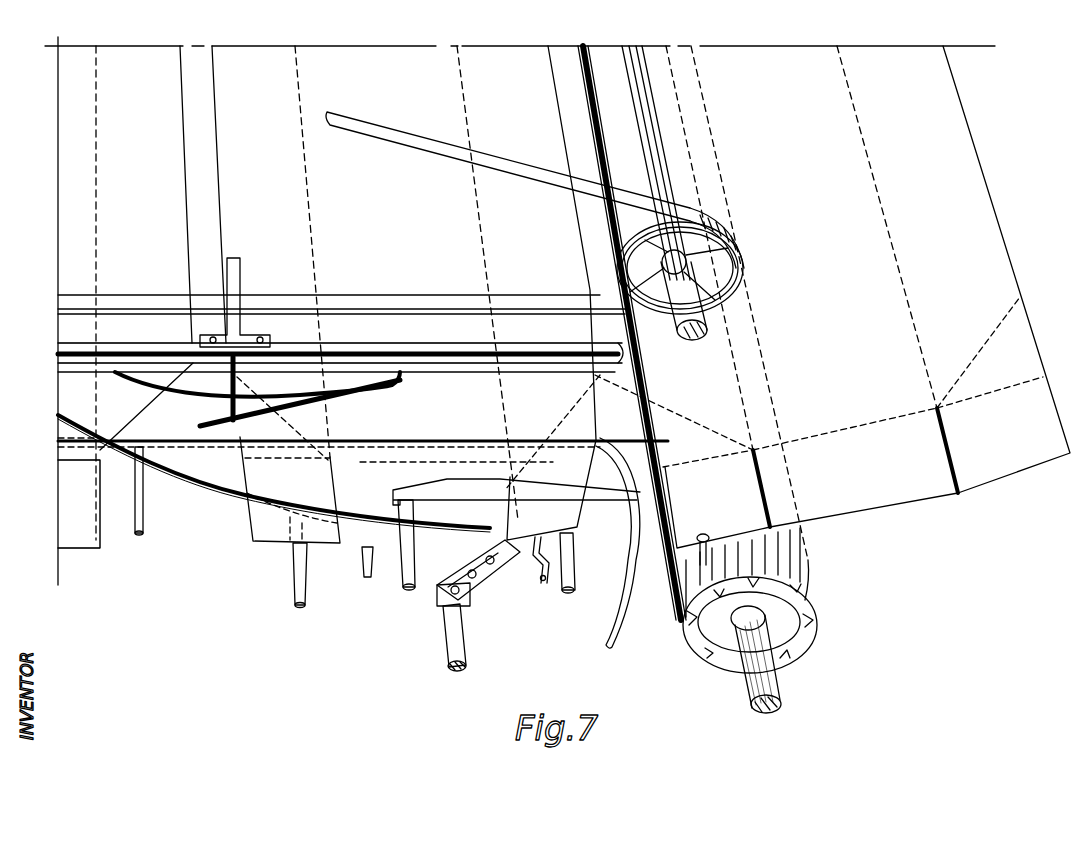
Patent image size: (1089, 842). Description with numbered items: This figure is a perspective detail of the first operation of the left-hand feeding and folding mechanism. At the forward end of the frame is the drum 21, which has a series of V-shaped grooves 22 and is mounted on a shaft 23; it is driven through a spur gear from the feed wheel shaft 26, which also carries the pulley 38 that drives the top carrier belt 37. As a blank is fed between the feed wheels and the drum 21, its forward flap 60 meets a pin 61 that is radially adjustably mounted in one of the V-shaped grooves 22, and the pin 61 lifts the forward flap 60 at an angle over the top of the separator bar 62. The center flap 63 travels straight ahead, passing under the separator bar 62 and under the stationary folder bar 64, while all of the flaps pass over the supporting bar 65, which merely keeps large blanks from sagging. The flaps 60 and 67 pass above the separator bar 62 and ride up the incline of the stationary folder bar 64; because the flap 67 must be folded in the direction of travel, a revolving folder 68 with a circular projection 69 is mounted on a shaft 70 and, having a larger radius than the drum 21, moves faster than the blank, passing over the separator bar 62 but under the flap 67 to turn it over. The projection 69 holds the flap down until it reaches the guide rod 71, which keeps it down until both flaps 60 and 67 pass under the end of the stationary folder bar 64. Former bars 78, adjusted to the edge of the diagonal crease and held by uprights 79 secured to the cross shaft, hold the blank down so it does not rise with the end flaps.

The drum 21 is at (812, 566).
The V-shaped grooves 22 is at (815, 623).
The shaft 23 is at (777, 682).
The feed wheel shaft 26 is at (673, 170).
The top carrier belt 37 is at (503, 163).
The pulley 38 is at (625, 243).
The forward flap 60 is at (263, 525).
The pin 61 is at (700, 553).
The separator bar 62 is at (599, 500).
The center flap 63 is at (78, 547).
The stationary folder bar 64 is at (398, 540).
The supporting bar 65 is at (193, 443).
The flap 67 is at (35, 407).
The revolving folder 68 is at (483, 552).
The circular projection 69 is at (610, 648).
The shaft 70 is at (450, 645).
The guide rod 71 is at (372, 393).
The former bars 78 is at (448, 327).
The uprights 79 is at (257, 280).